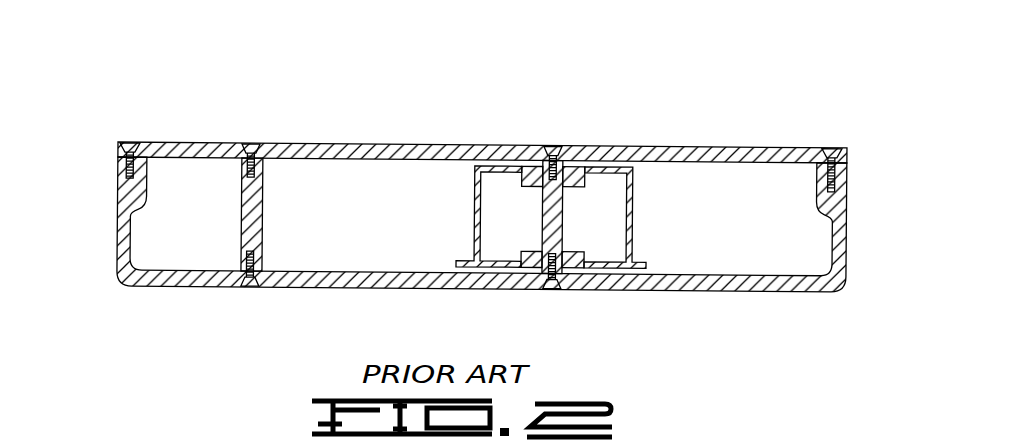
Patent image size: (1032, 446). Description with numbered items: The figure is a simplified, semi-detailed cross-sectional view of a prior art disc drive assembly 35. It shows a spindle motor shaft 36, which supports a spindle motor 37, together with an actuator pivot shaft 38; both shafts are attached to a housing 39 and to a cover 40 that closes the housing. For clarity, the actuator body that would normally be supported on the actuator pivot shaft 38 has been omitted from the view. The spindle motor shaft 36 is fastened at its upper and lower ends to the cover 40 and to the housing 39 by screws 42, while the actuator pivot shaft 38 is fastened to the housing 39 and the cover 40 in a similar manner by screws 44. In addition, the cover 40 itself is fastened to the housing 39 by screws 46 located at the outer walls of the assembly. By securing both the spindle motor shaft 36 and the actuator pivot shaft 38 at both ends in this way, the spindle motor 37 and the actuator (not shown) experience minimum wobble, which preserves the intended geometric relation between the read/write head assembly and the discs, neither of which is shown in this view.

The disc drive assembly 35 is at (430, 130).
The spindle motor shaft 36 is at (565, 213).
The spindle motor 37 is at (632, 228).
The actuator pivot shaft 38 is at (265, 208).
The housing 39 is at (118, 257).
The cover 40 is at (190, 142).
The screws 42 is at (558, 147).
The screws 44 is at (247, 143).
The screws 46 is at (130, 141).